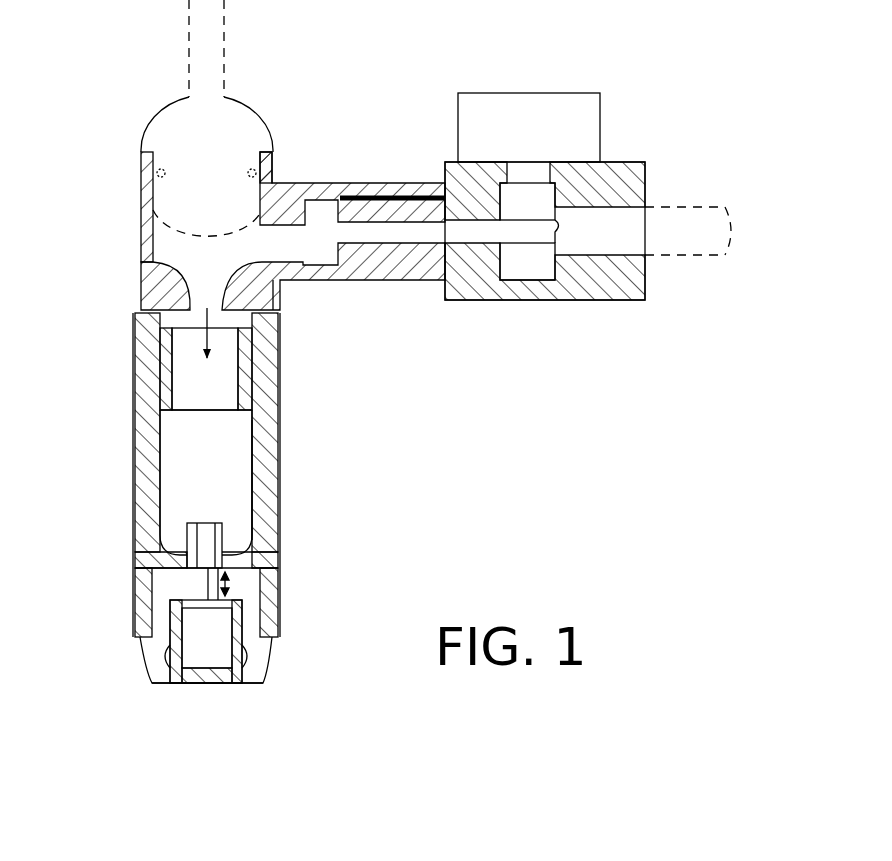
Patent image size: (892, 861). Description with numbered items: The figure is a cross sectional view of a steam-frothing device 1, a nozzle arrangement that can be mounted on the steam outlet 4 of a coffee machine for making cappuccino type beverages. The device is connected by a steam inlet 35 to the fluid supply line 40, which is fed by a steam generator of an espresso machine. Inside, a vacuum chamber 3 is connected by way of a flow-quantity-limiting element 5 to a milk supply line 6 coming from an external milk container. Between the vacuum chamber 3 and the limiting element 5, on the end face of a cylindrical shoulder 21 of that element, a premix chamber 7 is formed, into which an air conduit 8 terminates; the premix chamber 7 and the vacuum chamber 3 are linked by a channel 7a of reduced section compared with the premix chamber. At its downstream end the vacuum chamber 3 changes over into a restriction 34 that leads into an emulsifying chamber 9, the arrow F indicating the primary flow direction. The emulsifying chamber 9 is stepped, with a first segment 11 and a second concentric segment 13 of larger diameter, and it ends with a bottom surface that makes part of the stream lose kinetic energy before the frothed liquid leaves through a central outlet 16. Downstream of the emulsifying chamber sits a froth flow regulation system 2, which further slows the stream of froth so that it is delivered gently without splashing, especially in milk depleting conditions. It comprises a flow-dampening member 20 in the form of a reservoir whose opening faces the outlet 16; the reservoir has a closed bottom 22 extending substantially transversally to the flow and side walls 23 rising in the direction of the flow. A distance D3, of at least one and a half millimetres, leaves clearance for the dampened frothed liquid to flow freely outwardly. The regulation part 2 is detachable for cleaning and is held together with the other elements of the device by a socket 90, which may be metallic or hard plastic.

The steam-frothing device 1 is at (91, 497).
The froth flow regulation system 2 is at (285, 662).
The vacuum chamber 3 is at (196, 278).
The steam outlet 4 is at (273, 111).
The flow-quantity-limiting element 5 is at (612, 100).
The milk supply line 6 is at (680, 218).
The premix chamber 7 is at (315, 266).
The channel of reduced section 7a is at (280, 232).
The air conduit 8 is at (384, 197).
The emulsifying chamber 9 is at (177, 446).
The first segment 11 is at (248, 397).
The second concentric segment 13 is at (265, 513).
The central outlet 16 is at (252, 556).
The flow-dampening member 20 is at (169, 685).
The cylindrical shoulder 21 is at (413, 262).
The closed bottom 22 is at (207, 685).
The side walls 23 is at (166, 652).
The restriction 34 is at (150, 307).
The steam inlet 35 is at (168, 198).
The fluid supply line 40 is at (190, 28).
The socket 90 is at (280, 490).
The distance D3 is at (228, 581).